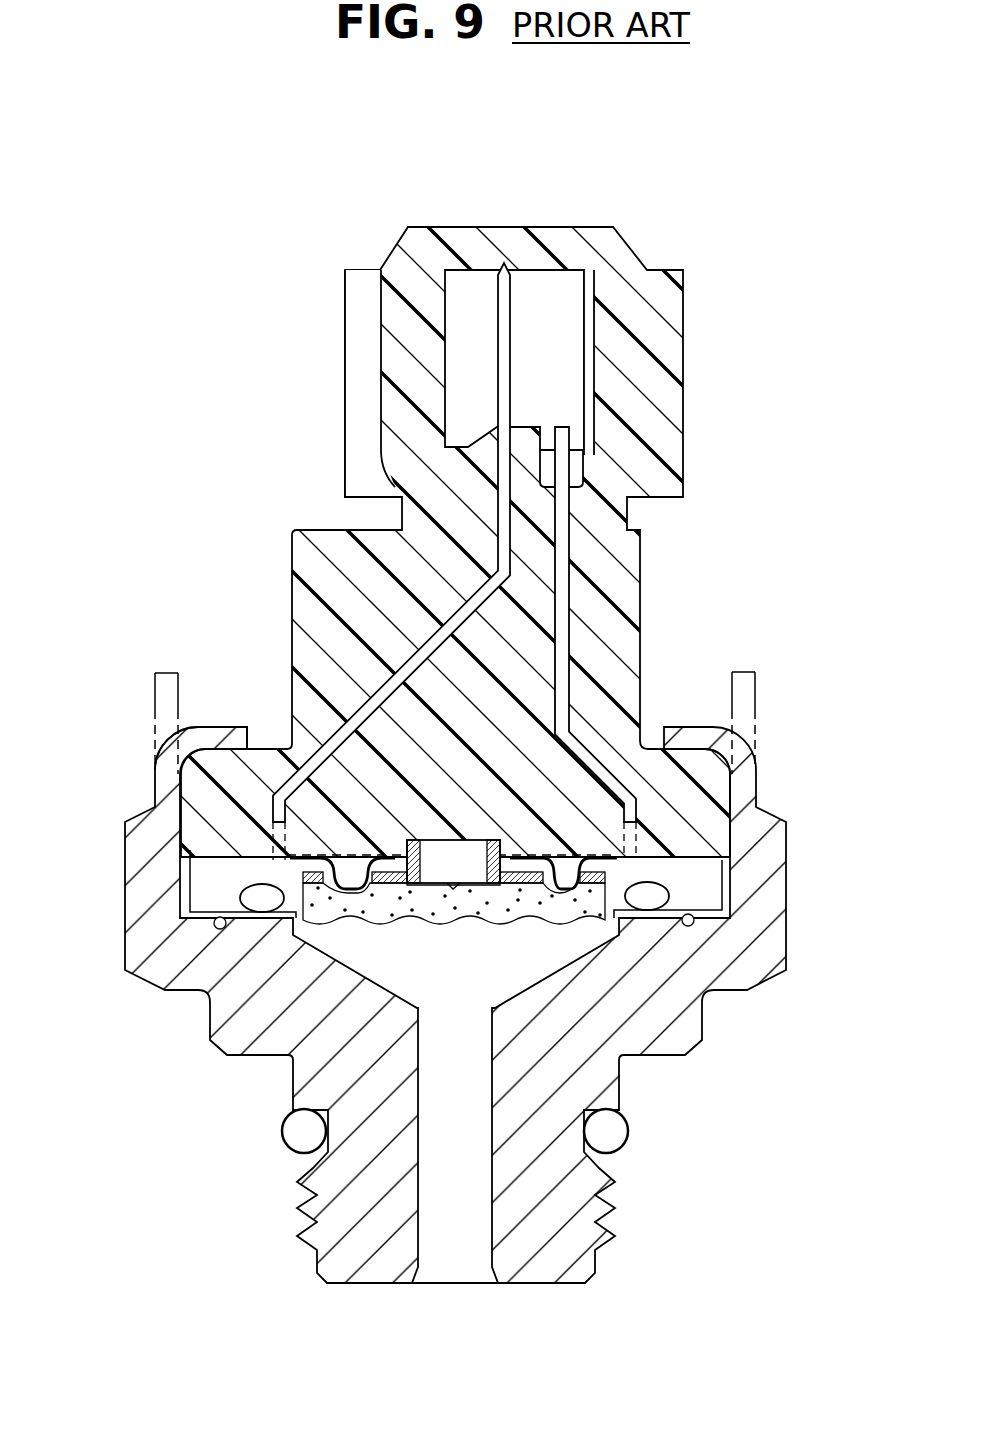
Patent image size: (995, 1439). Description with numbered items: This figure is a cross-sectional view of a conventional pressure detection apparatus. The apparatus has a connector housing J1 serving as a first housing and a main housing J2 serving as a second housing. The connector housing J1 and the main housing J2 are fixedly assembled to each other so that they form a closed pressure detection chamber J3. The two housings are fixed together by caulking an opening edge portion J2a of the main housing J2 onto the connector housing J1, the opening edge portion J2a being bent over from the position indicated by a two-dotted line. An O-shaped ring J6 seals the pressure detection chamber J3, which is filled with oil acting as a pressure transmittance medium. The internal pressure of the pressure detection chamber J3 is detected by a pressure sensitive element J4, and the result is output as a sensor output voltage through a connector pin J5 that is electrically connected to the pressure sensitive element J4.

The connector housing J1 is at (620, 554).
The main housing J2 is at (145, 943).
The opening edge portion J2a is at (220, 733).
The pressure detection chamber J3 is at (427, 912).
The pressure sensitive element J4 is at (473, 883).
The connector pin J5 is at (503, 366).
The O-shaped ring J6 is at (262, 900).